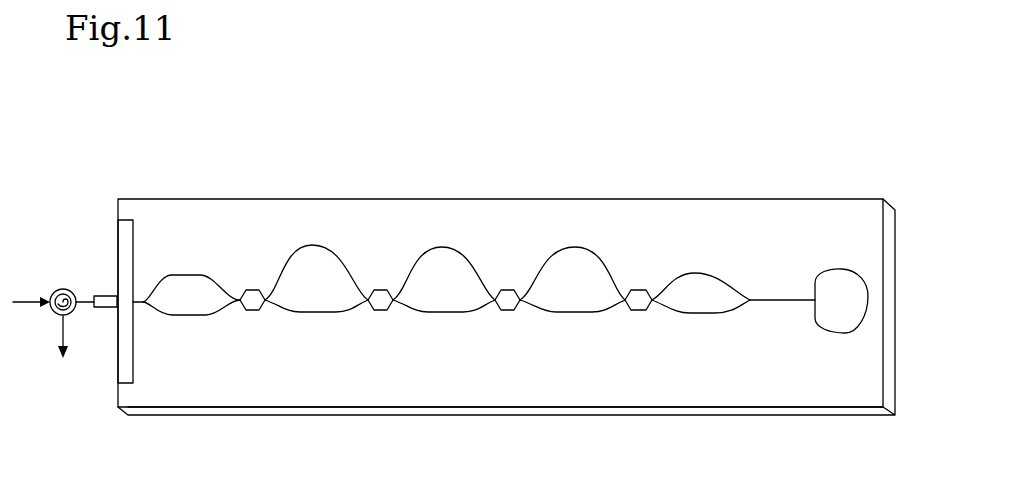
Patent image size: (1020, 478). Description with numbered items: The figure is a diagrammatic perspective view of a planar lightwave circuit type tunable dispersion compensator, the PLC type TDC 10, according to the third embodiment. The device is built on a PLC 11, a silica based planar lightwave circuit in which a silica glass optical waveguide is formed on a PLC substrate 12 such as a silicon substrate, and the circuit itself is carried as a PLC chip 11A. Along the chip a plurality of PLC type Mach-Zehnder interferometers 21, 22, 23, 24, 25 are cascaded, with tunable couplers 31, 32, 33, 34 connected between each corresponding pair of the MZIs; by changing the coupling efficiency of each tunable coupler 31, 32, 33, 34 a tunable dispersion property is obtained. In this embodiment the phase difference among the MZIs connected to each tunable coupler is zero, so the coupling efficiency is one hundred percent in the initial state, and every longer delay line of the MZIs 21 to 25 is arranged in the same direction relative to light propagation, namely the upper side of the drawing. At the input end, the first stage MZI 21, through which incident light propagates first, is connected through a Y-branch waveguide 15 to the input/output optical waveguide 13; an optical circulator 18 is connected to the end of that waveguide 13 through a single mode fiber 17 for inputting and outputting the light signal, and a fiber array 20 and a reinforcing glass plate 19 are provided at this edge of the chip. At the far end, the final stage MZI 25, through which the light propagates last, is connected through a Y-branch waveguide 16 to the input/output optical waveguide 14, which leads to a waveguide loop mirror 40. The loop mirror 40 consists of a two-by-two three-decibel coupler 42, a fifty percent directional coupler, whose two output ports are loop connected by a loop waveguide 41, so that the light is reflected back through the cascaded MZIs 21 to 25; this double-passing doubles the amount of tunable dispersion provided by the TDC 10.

The PLC type TDC 10 is at (492, 164).
The PLC 11 is at (483, 255).
The PLC chip 11A is at (363, 199).
The PLC substrate 12 is at (300, 416).
The input/output optical waveguide 13 is at (126, 306).
The input/output optical waveguide 14 is at (772, 302).
The Y-branch waveguide 15 is at (143, 300).
The Y-branch waveguide 16 is at (750, 300).
The single mode fiber 17 is at (90, 294).
The optical circulator 18 is at (62, 289).
The glass plate 19 is at (128, 372).
The fiber array 20 is at (103, 296).
The Mach-Zehnder interferometer 21 is at (190, 316).
The Mach-Zehnder interferometer 22 is at (316, 313).
The Mach-Zehnder interferometer 23 is at (446, 313).
The Mach-Zehnder interferometer 24 is at (571, 313).
The Mach-Zehnder interferometer 25 is at (700, 272).
The tunable coupler 31 is at (250, 290).
The tunable coupler 32 is at (378, 290).
The tunable coupler 33 is at (505, 290).
The tunable coupler 34 is at (635, 290).
The waveguide loop mirror 40 is at (815, 320).
The loop waveguide 41 is at (840, 333).
The 3 dB coupler 42 is at (811, 298).